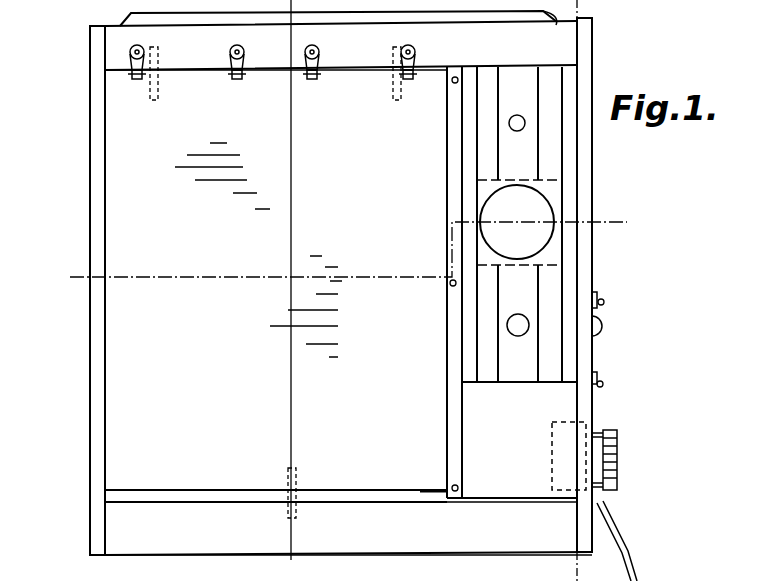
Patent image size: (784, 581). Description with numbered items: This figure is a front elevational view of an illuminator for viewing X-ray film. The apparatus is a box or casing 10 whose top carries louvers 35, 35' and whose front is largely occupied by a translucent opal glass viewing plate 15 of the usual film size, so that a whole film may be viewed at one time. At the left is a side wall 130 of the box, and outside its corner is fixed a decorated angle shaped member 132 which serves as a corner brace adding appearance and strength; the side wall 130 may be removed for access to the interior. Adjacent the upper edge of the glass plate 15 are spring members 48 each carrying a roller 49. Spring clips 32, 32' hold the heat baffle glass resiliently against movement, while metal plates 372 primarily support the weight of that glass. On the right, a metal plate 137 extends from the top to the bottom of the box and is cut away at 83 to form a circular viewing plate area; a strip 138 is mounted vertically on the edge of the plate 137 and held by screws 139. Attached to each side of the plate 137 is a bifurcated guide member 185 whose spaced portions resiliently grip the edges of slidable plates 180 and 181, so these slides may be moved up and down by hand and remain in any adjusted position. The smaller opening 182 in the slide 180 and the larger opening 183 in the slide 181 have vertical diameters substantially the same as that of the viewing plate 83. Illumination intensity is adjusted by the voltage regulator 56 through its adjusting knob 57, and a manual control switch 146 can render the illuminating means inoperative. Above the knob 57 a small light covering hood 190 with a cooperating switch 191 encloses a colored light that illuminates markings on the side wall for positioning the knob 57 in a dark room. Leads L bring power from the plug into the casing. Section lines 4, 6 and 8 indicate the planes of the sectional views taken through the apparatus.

The side wall 130 is at (90, 131).
The angle shaped member 132 is at (100, 307).
The box or casing 10 is at (592, 257).
The louver 35 is at (338, 28).
The louver 35' is at (478, 296).
The spring member 48 is at (315, 60).
The roller 49 is at (319, 69).
The spring clip 32 is at (254, 282).
The spring clip 32' is at (377, 83).
The section line 4- 4 is at (292, 108).
The glass viewing plate 15 is at (118, 397).
The section line 8- 8 is at (70, 277).
The slidable plate 180 is at (517, 88).
The guide member 185 is at (483, 88).
The viewing plate 83 is at (538, 236).
The smaller opening 182 is at (508, 125).
The larger opening 183 is at (507, 328).
The slidable plate 181 is at (522, 384).
The strip 138 is at (455, 443).
The screw 139 is at (456, 486).
The metal plate 372 is at (435, 493).
The metal plate 137 is at (535, 465).
The switch 191 is at (604, 301).
The light covering hood 190 is at (604, 327).
The manual control switch 146 is at (604, 379).
The voltage regulator 56 is at (563, 422).
The adjusting knob 57 is at (618, 443).
The leads L is at (613, 540).
The section line 6- 6 is at (577, 8).